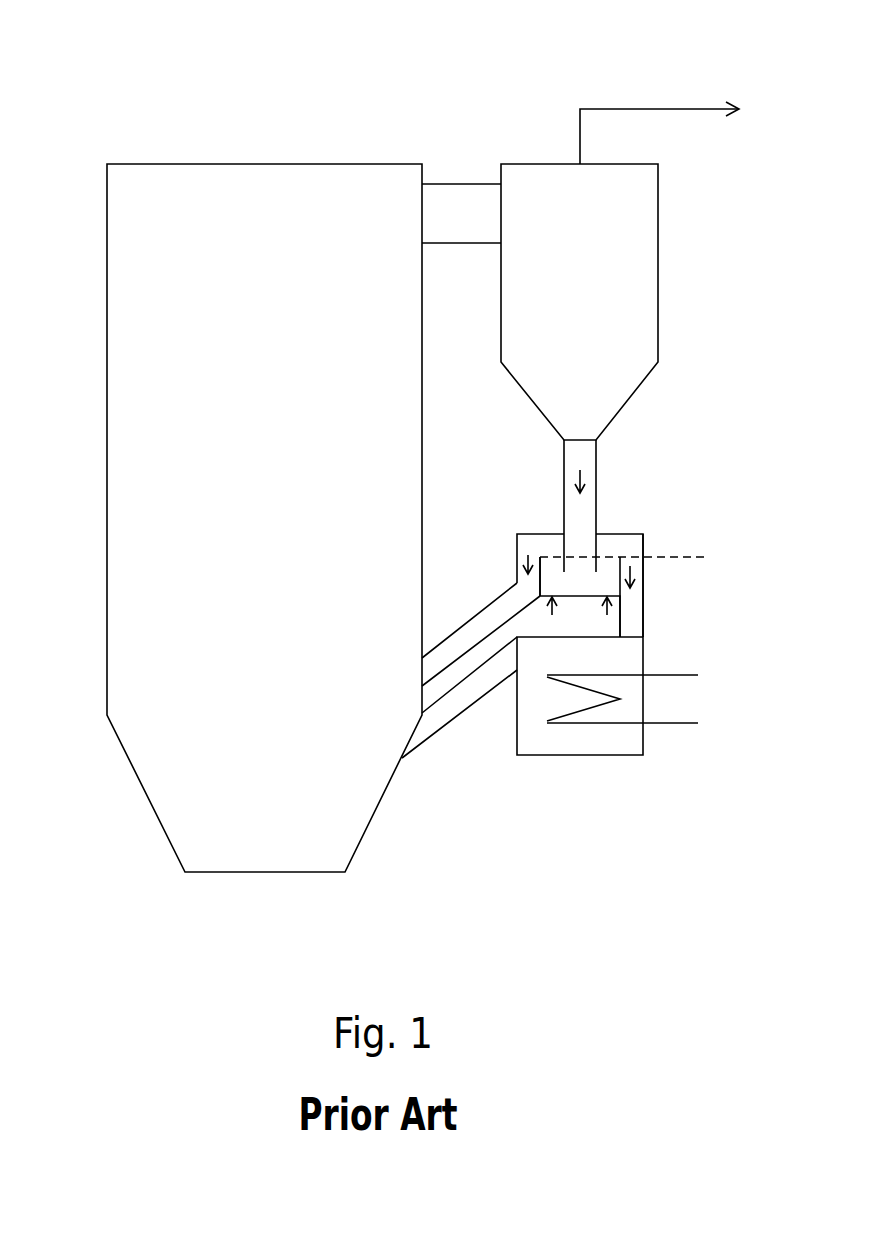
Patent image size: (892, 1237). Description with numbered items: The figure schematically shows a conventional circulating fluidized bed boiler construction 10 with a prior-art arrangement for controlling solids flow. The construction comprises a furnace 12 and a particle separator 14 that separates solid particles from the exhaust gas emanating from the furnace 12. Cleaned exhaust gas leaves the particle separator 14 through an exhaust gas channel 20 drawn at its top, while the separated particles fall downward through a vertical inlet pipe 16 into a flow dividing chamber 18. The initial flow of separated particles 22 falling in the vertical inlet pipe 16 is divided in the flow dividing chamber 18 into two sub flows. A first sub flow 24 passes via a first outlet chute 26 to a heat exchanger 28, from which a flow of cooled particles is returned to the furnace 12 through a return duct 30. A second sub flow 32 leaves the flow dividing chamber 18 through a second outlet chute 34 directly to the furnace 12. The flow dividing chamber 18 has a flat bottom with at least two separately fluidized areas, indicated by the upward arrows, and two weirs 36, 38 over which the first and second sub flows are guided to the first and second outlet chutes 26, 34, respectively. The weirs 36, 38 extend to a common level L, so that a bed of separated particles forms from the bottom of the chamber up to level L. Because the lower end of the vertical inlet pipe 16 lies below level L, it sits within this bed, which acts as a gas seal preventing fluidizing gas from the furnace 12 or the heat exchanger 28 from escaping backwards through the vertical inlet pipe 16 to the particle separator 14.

The circulating fluidized bed boiler construction 10 is at (127, 128).
The furnace 12 is at (295, 509).
The particle separator 14 is at (605, 318).
The vertical inlet pipe 16 is at (597, 455).
The flow dividing chamber 18 is at (528, 534).
The exhaust gas channel 20 is at (635, 108).
The initial flow of separated particles 22 is at (582, 477).
The first sub flow 24 is at (630, 568).
The first outlet chute 26 is at (644, 617).
The heat exchanger 28 is at (644, 742).
The return duct 30 is at (453, 720).
The second sub flow 32 is at (517, 557).
The second outlet chute 34 is at (517, 581).
The weir 36 is at (620, 557).
The weir 38 is at (545, 558).
The common level L is at (683, 553).